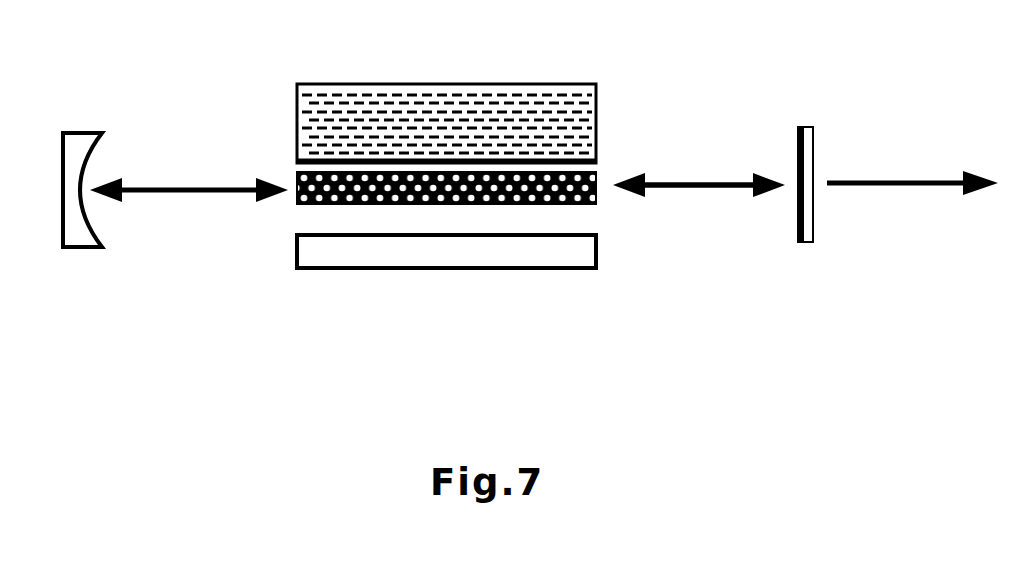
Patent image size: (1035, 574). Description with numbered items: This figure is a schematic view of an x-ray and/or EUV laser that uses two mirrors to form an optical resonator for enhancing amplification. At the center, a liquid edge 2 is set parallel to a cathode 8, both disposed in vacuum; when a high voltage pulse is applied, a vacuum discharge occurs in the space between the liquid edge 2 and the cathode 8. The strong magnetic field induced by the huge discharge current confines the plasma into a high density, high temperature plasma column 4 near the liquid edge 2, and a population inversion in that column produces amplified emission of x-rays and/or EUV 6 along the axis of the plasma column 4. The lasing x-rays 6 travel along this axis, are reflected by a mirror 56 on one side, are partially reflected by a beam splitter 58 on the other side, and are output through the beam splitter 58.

The liquid edge 2 is at (422, 133).
The plasma column 4 is at (596, 181).
The x-ray and/or EUV 6 is at (698, 186).
The cathode 8 is at (533, 250).
The mirror 56 is at (73, 162).
The beam splitter 58 is at (808, 130).